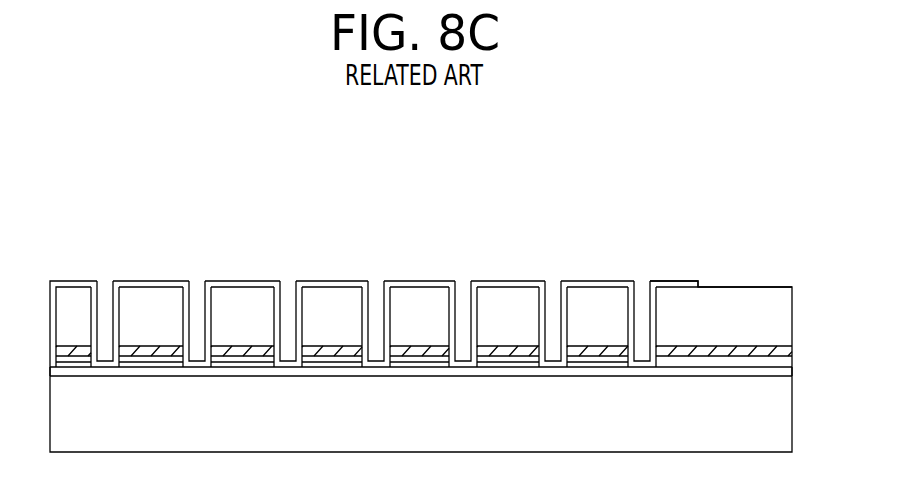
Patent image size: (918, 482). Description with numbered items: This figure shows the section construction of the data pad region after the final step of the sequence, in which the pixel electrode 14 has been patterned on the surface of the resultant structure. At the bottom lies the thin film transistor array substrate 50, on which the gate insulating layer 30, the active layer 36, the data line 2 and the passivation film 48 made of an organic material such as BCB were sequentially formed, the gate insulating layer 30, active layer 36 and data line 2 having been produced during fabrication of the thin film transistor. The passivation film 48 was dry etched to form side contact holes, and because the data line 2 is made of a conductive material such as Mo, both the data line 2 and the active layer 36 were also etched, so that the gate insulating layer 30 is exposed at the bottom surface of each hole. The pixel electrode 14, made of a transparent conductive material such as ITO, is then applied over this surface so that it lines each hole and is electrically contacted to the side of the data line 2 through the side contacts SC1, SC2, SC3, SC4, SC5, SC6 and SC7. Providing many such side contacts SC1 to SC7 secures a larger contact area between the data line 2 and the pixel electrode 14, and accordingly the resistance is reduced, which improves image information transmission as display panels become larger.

The side contact SC1 is at (111, 275).
The side contact SC2 is at (203, 275).
The side contact SC3 is at (294, 275).
The side contact SC4 is at (382, 275).
The side contact SC5 is at (469, 275).
The side contact SC6 is at (559, 275).
The side contact SC7 is at (648, 275).
The pixel electrode 14 is at (692, 284).
The passivation film 48 is at (777, 318).
The data line 2 is at (783, 352).
The active layer 36 is at (782, 366).
The gate insulating layer 30 is at (778, 375).
The thin film transistor array substrate 50 is at (773, 427).